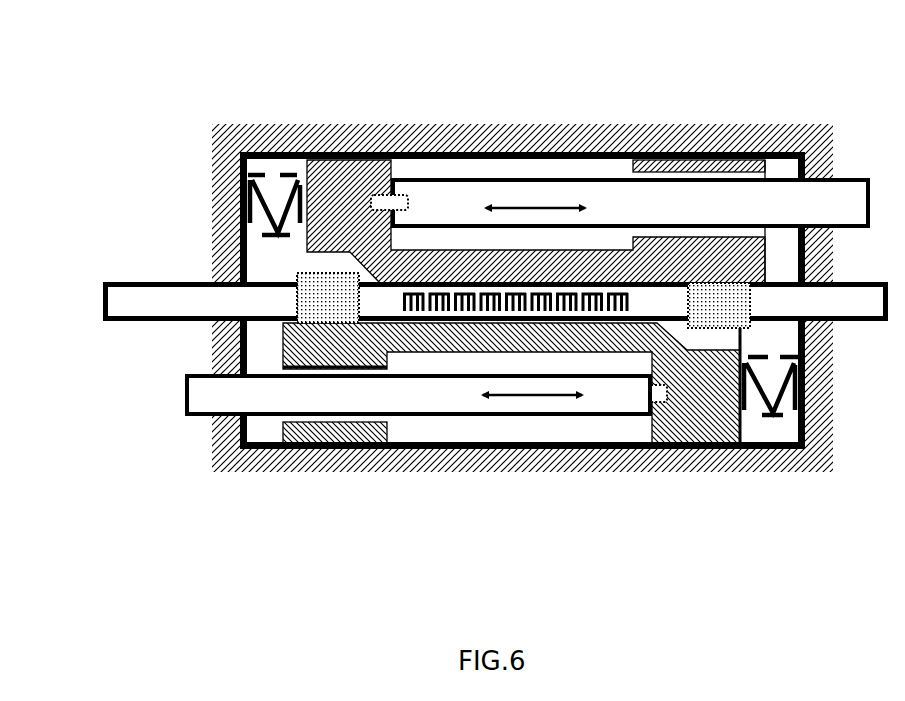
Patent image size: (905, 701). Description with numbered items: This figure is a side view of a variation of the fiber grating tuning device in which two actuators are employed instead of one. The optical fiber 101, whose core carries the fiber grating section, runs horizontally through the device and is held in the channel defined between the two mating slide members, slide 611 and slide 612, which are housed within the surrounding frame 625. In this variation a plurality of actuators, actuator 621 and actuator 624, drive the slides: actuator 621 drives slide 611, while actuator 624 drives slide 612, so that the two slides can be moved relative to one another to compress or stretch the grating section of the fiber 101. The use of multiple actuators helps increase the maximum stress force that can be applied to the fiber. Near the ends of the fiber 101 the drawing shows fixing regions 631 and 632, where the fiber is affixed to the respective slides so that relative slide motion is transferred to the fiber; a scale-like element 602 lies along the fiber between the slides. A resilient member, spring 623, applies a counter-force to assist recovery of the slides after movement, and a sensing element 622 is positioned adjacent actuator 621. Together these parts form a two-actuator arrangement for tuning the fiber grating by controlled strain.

The optical fiber 101 is at (140, 298).
The scale 602 is at (480, 310).
The slide 611 is at (328, 205).
The slide 612 is at (683, 400).
The actuator 621 is at (476, 193).
The first sensor 622 is at (383, 200).
The spring 623 is at (280, 190).
The actuator 624 is at (277, 392).
The housing 625 is at (592, 153).
The first detection block 631 is at (705, 310).
The second detection block 632 is at (325, 308).